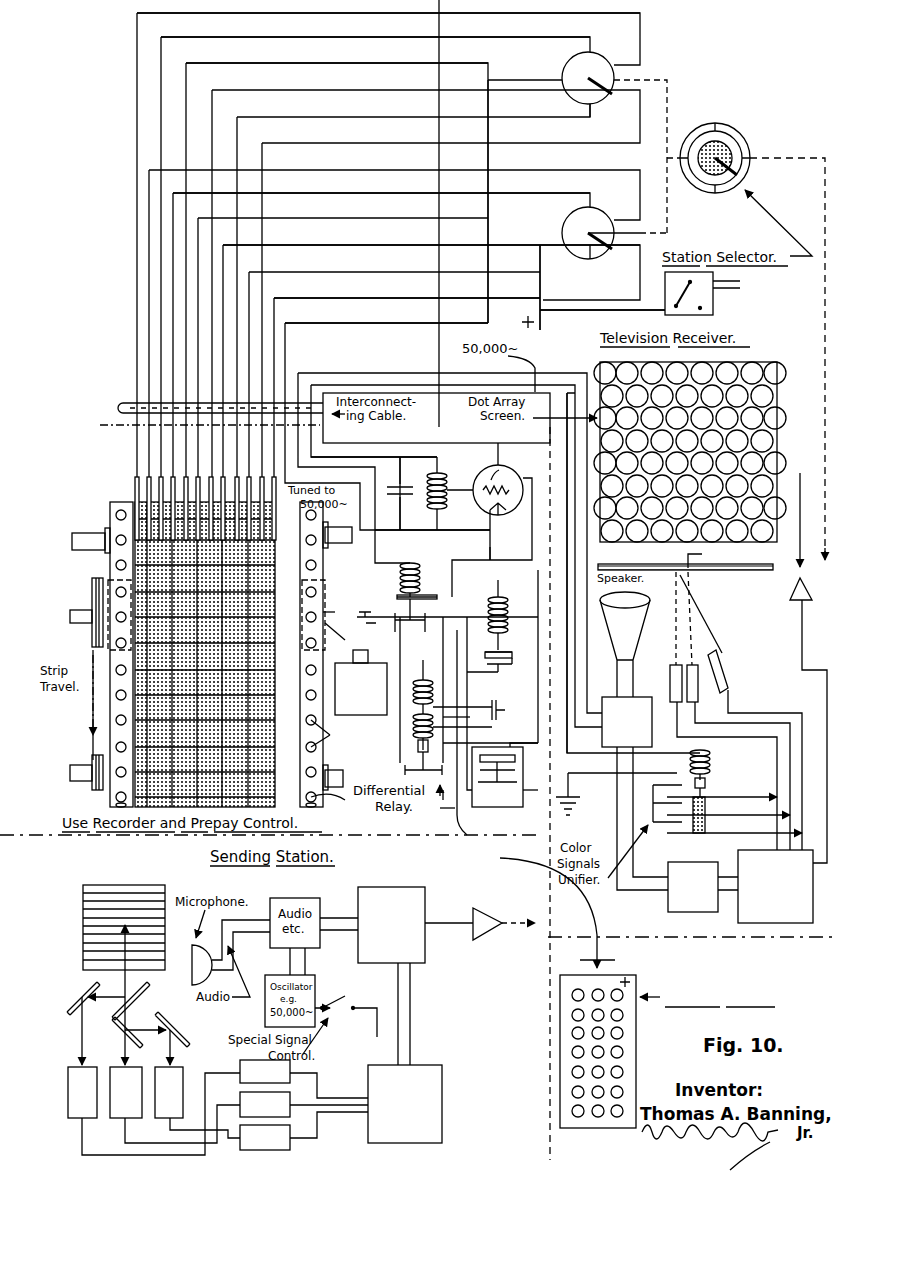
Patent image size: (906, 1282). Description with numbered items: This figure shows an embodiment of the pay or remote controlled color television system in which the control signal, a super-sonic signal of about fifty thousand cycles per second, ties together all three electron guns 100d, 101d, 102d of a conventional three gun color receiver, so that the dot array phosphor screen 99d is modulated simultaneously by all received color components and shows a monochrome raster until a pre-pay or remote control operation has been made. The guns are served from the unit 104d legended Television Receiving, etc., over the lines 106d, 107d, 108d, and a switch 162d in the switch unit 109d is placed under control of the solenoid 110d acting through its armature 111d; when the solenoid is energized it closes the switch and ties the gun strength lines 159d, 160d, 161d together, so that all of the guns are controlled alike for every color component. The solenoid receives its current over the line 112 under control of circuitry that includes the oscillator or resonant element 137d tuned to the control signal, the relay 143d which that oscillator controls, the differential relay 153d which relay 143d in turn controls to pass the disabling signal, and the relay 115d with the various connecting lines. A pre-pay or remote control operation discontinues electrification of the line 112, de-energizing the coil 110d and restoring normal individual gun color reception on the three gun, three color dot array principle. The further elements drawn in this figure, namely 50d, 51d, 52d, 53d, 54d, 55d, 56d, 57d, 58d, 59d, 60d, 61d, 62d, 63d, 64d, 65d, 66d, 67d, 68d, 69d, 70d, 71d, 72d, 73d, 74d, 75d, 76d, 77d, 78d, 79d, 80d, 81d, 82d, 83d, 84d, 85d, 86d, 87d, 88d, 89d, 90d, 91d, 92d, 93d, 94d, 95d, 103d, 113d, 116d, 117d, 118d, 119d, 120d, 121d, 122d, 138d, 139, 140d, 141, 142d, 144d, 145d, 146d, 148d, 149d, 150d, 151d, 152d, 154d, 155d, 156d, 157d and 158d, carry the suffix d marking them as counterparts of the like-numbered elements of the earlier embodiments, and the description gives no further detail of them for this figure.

The stylus control lines 71d is at (400, 37).
The stylus control lines 70d is at (394, 193).
The common bus line 75d is at (488, 165).
The return line 122d is at (386, 313).
The supply line 72d is at (540, 290).
The rotary switch 67d is at (595, 94).
The switch connection 69d is at (570, 100).
The rotary switch 66d is at (594, 253).
The switch connection 68d is at (574, 260).
The station selector dial 64d is at (733, 126).
The station selector knob 65d is at (678, 150).
The main switch and rectifier 74d is at (712, 290).
The main switch lead 73d is at (665, 289).
The phosphor screen 99d is at (777, 366).
The tuner connection 76d is at (825, 392).
The mask plate 103d is at (710, 572).
The capacitor 139 is at (403, 504).
The capacitor connections 141 is at (396, 485).
The tuning coil 138d is at (458, 476).
The oscillator 137d is at (430, 470).
The vacuum tube 140d is at (520, 462).
The tube grid 142d is at (492, 475).
The tube cathode lead 146d is at (490, 552).
The relay 143d is at (420, 556).
The relay core 144d is at (436, 582).
The relay armature 145d is at (408, 618).
The battery circuit lead 150d is at (425, 620).
The relay contact 149d is at (396, 627).
The relay contact 148d is at (425, 630).
The differential relay coil 152d is at (423, 682).
The differential relay leads 154d is at (418, 707).
The differential relay 153d is at (410, 734).
The relay armature 155d is at (418, 745).
The relay contact bar 157d is at (405, 770).
The relay lead 156d is at (450, 740).
The capacitor 158d is at (500, 724).
The connecting lead 121d is at (457, 820).
The relay 115d is at (504, 596).
The relay coil 116d is at (506, 616).
The relay frame lead 151d is at (470, 620).
The relay armature 117d is at (508, 636).
The relay contact 119d is at (486, 652).
The relay contact lead 118d is at (503, 668).
The relay contact 120d is at (512, 662).
The normally closed switch contact 80d is at (504, 786).
The switch contact 78d is at (495, 768).
The switch contact 79d is at (505, 790).
The switch lead 77d is at (516, 797).
The line 112 is at (567, 628).
The ground lead 113d is at (580, 765).
The recorder strip 62d is at (137, 500).
The strip drive roller 57d is at (110, 530).
The recorder block 50d is at (338, 540).
The strip guide 53d is at (108, 582).
The drive roller 60d is at (92, 605).
The strip travel path 59d is at (93, 734).
The take-up roller 61d is at (92, 765).
The strip end 58d is at (123, 797).
The drive link 54d is at (345, 604).
The drive link 56d is at (337, 632).
The synchronous motor 55d is at (350, 670).
The sprocket holes 52d is at (332, 733).
The prepay control block 51d is at (336, 778).
The strip lead 63d is at (330, 795).
The electron gun 100d is at (670, 668).
The electron gun 101d is at (696, 698).
The electron gun 102d is at (728, 676).
The line 107d is at (757, 723).
The line 108d is at (802, 723).
The line 106d is at (718, 744).
The solenoid 110d is at (712, 768).
The armature 111d is at (706, 784).
The switch unit 109d is at (693, 832).
The switch 162d is at (646, 815).
The gun strength line 159d is at (745, 796).
The gun strength line 160d is at (728, 809).
The gun strength line 161d is at (762, 842).
The television receiving unit 104d is at (748, 922).
The scanned picture 88d is at (138, 912).
The dichroic mirror 89d is at (136, 990).
The dichroic mirror 90d is at (117, 1030).
The mirror 91d is at (88, 988).
The mirror 92d is at (172, 1020).
The red pickup 85d is at (78, 1116).
The green pickup 86d is at (122, 1116).
The blue pickup 87d is at (175, 1116).
The color signals transmitter 94d is at (425, 964).
The transmitting amplifier 95d is at (483, 935).
The television dot sampler 93d is at (444, 1106).
The remote control link 84d is at (532, 862).
The remote control lead 83d is at (597, 962).
The remote control unit 81d is at (638, 985).
The remote control buttons 82d is at (623, 1050).